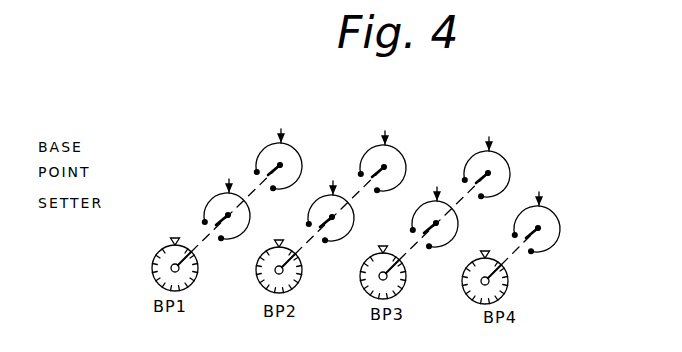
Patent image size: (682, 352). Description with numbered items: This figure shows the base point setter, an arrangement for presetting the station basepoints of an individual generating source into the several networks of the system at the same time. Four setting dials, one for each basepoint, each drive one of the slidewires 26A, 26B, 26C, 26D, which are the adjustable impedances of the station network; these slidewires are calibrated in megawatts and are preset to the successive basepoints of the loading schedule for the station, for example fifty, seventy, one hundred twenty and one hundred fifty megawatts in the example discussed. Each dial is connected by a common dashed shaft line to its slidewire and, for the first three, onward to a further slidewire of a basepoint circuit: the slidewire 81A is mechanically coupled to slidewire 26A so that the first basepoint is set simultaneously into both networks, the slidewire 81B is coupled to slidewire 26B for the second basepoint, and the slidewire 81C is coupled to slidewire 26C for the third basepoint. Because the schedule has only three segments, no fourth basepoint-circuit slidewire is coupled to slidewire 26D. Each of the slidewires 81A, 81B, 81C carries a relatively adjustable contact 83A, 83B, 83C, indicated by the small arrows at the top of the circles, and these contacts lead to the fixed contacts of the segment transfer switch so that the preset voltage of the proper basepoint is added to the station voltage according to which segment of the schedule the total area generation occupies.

The slidewire 26A is at (250, 214).
The slidewire 26B is at (354, 216).
The slidewire 26C is at (458, 222).
The slidewire 26D is at (560, 227).
The slidewire 81A is at (297, 151).
The slidewire 81B is at (401, 153).
The slidewire 81C is at (505, 159).
The relatively adjustable contact 83A is at (281, 131).
The relatively adjustable contact 83B is at (385, 132).
The relatively adjustable contact 83C is at (489, 138).